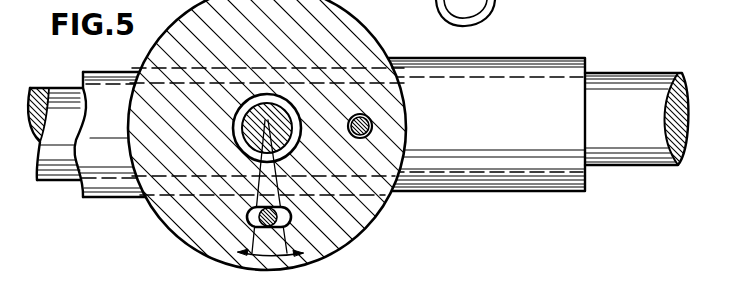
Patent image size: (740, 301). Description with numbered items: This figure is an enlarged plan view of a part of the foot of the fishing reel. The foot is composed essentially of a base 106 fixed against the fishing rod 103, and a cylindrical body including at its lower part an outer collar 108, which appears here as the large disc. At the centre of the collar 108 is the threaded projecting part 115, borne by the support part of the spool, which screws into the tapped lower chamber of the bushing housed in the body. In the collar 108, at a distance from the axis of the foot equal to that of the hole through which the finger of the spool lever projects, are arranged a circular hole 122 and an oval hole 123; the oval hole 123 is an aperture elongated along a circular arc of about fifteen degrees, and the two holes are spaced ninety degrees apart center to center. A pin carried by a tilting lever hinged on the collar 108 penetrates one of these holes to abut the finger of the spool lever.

The fishing rod 103 is at (637, 150).
The base 106 is at (522, 177).
The outer collar 108 is at (167, 208).
The threaded projecting part 115 is at (266, 112).
The circular hole 122 is at (375, 122).
The oval hole 123 is at (246, 214).